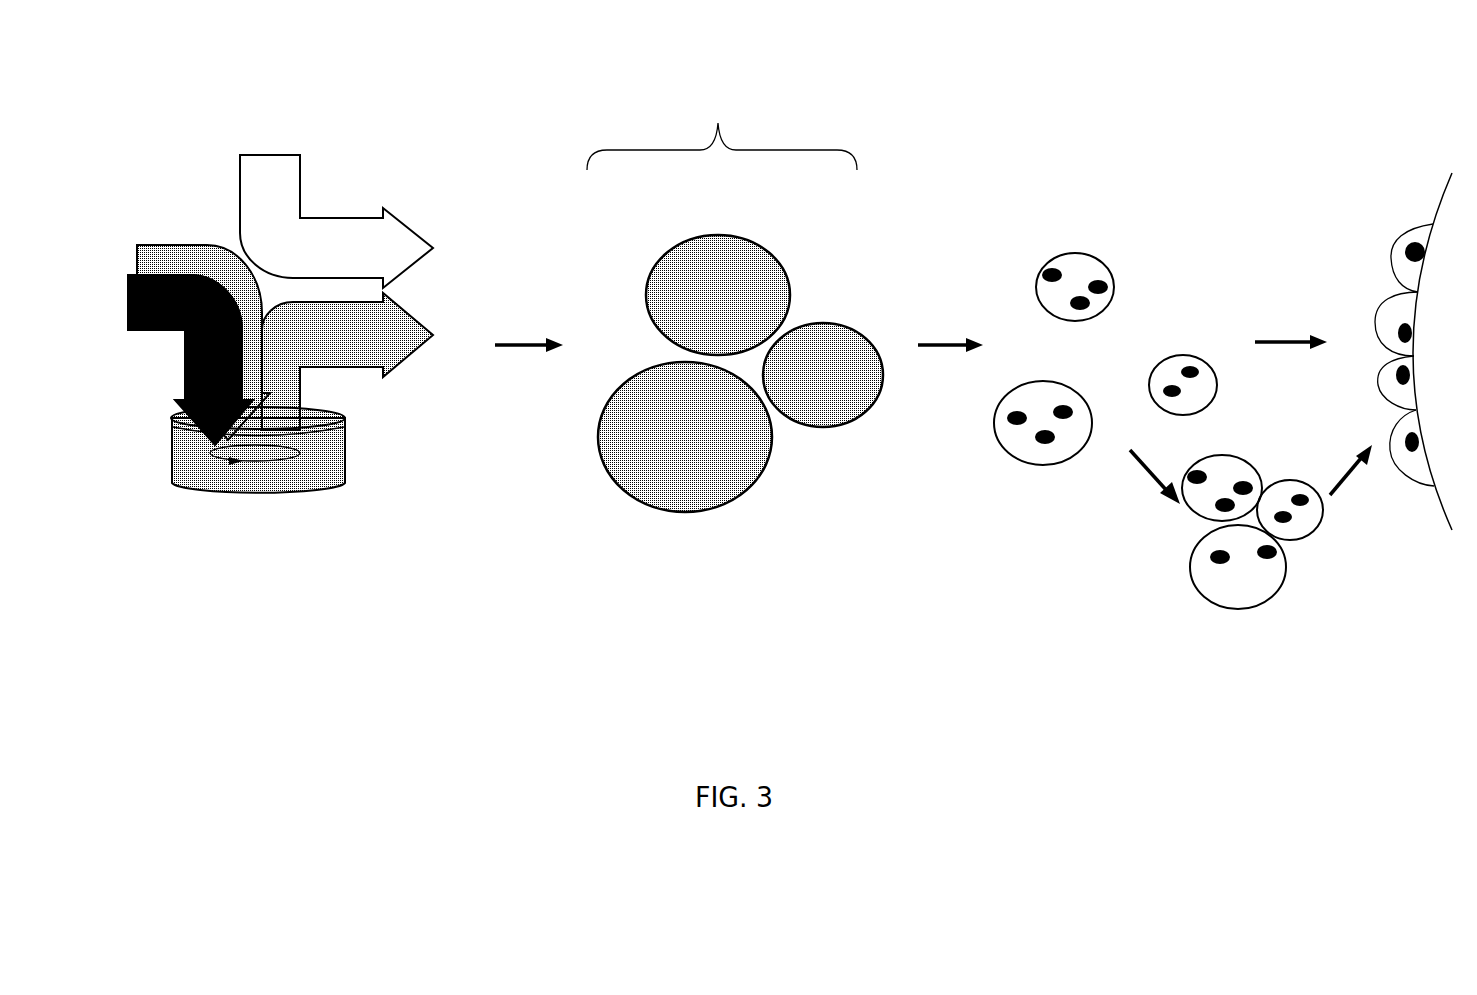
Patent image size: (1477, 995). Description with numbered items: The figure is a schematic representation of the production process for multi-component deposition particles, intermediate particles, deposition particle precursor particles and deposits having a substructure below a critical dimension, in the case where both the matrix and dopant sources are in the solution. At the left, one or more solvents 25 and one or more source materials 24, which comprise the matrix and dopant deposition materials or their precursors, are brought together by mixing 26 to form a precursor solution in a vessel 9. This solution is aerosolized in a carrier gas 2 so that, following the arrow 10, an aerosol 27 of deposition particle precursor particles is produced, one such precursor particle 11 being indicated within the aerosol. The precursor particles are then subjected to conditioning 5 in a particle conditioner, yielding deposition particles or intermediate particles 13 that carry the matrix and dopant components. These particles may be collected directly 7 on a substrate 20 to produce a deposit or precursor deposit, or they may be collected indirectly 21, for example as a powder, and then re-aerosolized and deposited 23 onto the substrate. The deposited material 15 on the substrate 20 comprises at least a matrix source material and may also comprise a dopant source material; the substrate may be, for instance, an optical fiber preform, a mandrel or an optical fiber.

The carrier gas 2 is at (434, 232).
The solvent 25 is at (168, 243).
The source material 24 is at (163, 358).
The collection vessel 9 is at (333, 466).
The mixing 26 is at (252, 480).
The process step arrow 10 is at (543, 330).
The aerosol 27 is at (735, 302).
The droplet 11 is at (714, 250).
The conditioning 5 is at (970, 328).
The cell-laden microcapsule 13 is at (1079, 252).
The indirect collection 21 is at (1148, 492).
The re-aerosolizing and depositing 23 is at (1357, 482).
The direct collection 7 is at (1308, 326).
The substrate 20 is at (1428, 195).
The attached cells 15 is at (1378, 243).